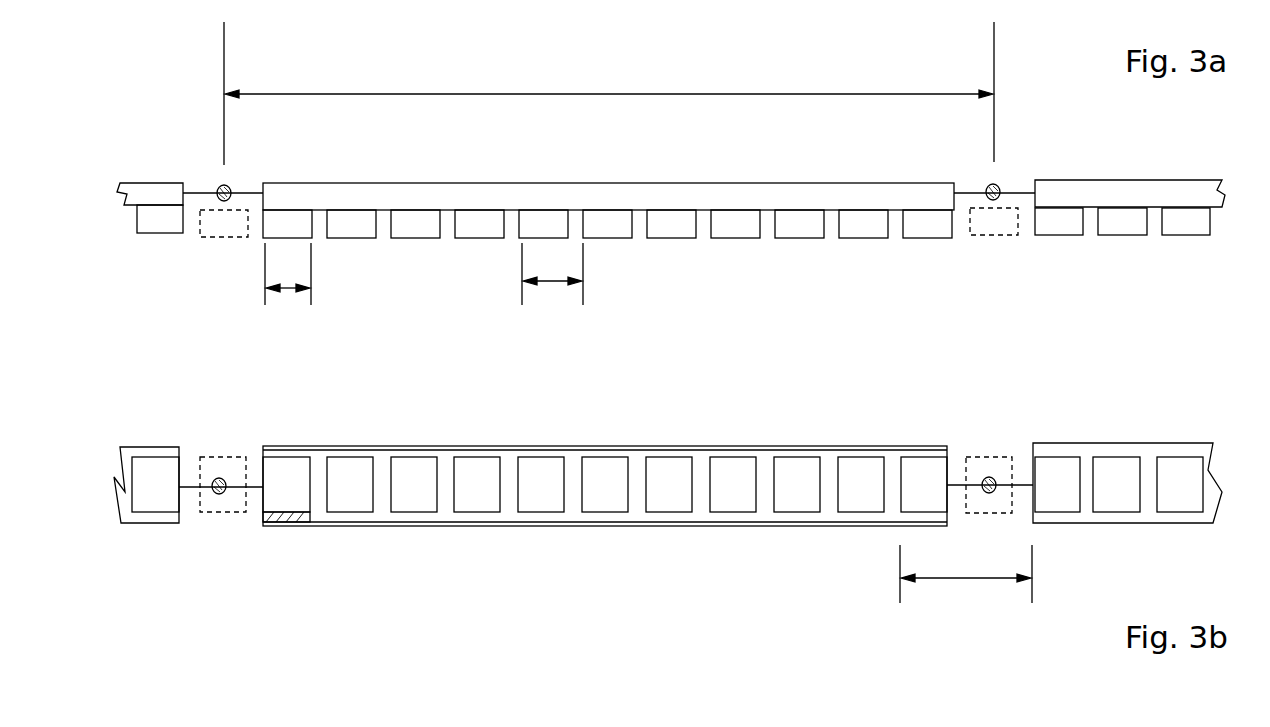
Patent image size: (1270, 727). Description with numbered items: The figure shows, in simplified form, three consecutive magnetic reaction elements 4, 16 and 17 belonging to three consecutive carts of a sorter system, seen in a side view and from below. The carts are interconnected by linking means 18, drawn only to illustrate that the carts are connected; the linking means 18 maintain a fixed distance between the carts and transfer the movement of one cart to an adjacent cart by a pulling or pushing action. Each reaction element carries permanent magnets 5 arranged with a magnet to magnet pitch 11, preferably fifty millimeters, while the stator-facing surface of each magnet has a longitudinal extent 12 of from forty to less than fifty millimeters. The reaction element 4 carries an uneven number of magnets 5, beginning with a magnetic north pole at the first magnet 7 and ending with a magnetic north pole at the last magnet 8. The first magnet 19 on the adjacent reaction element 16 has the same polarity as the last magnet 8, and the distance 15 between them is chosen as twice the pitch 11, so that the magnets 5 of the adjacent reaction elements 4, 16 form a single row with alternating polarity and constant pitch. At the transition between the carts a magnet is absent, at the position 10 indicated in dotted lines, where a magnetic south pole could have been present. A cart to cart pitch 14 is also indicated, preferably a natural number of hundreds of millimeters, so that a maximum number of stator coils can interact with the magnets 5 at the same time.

In FIG. 3A, the magnetic reaction element 4 is at (672, 186).
In FIG. 3B, the magnetic reaction element 4 is at (604, 448).
In FIG. 3A, the permanent magnets 5 is at (678, 227).
In FIG. 3B, the permanent magnets 5 is at (535, 513).
In FIG. 3B, the first magnet 7 is at (297, 500).
In FIG. 3B, the last magnet 8 is at (923, 467).
In FIG. 3A, the position of absent magnet 10 is at (990, 223).
In FIG. 3B, the position of absent magnet 10 is at (212, 458).
In FIG. 3A, the magnet to magnet pitch 11 is at (546, 300).
In FIG. 3A, the extent of magnet surface 12 is at (289, 306).
In FIG. 3A, the cart to cart pitch 14 is at (609, 82).
In FIG. 3B, the distance 15 is at (967, 594).
In FIG. 3A, the adjacent reaction element 16 is at (1117, 195).
In FIG. 3B, the adjacent reaction element 16 is at (1118, 450).
In FIG. 3A, the magnetic reaction element 17 is at (160, 190).
In FIG. 3B, the magnetic reaction element 17 is at (137, 450).
In FIG. 3A, the linking means 18 is at (995, 186).
In FIG. 3B, the linking means 18 is at (224, 482).
In FIG. 3B, the first magnet 19 is at (1066, 500).